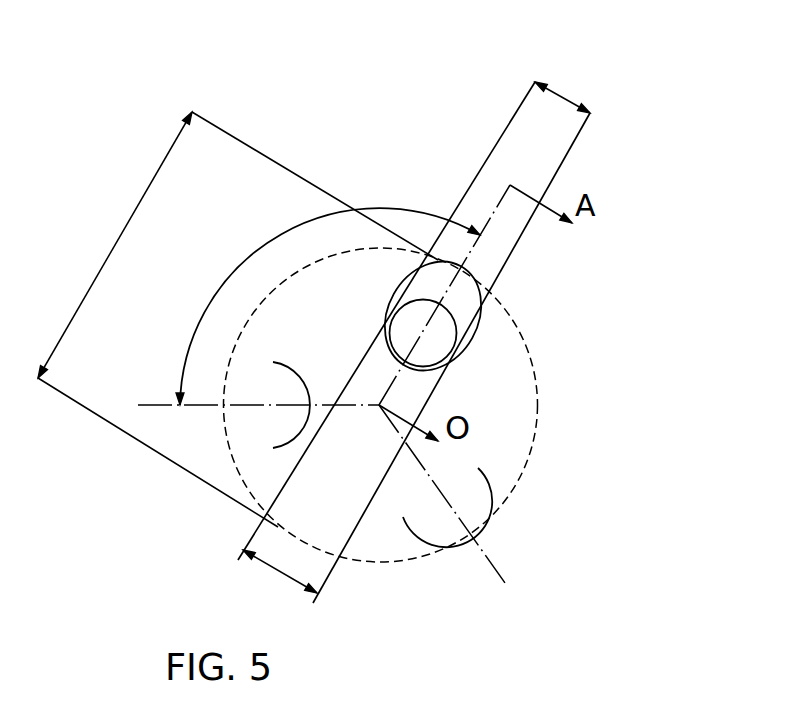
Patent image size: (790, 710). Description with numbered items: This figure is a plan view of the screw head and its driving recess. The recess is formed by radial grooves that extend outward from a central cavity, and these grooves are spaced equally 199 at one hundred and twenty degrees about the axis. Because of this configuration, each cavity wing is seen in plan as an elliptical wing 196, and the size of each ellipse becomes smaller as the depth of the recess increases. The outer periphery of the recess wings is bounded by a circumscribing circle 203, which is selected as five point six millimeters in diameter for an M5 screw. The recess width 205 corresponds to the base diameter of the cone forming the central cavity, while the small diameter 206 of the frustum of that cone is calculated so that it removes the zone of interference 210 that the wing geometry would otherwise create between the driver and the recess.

The elliptical cavity wing 196 is at (415, 284).
The equal spacing of the grooves 199 is at (276, 232).
The circumscribing circle of the recess wings 203 is at (118, 241).
The recess width 205 is at (278, 573).
The small diameter of the frustum of the cone 206 is at (566, 103).
The zone of interference 210 is at (400, 366).